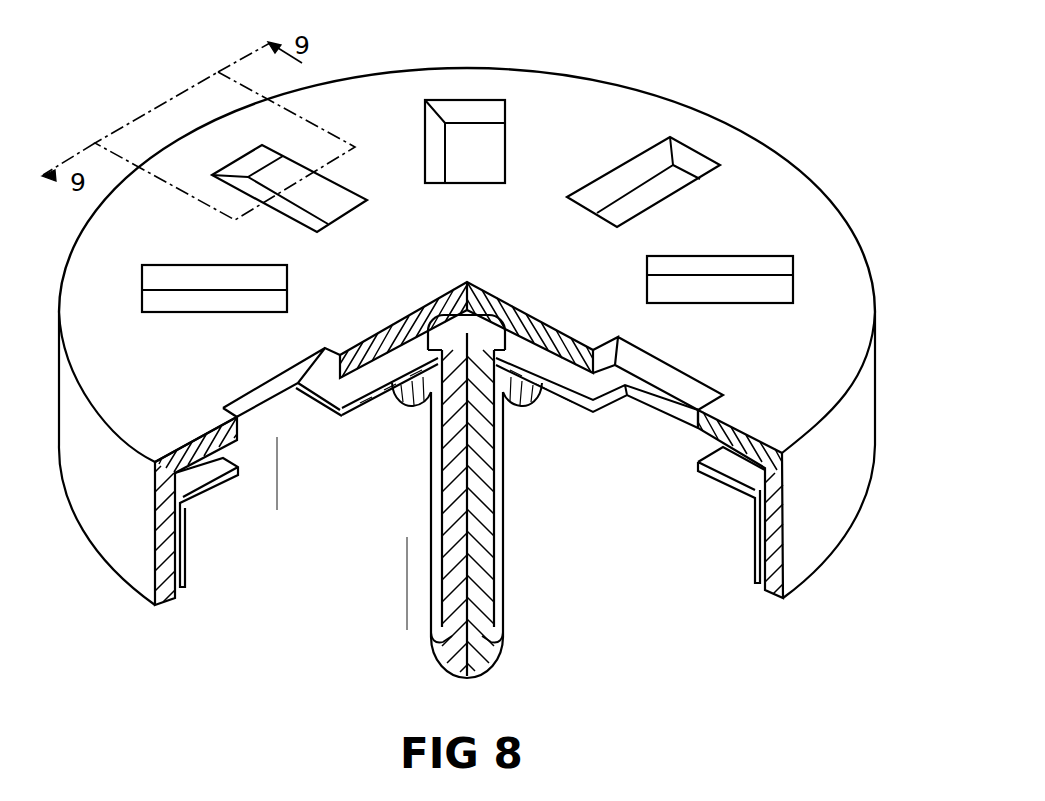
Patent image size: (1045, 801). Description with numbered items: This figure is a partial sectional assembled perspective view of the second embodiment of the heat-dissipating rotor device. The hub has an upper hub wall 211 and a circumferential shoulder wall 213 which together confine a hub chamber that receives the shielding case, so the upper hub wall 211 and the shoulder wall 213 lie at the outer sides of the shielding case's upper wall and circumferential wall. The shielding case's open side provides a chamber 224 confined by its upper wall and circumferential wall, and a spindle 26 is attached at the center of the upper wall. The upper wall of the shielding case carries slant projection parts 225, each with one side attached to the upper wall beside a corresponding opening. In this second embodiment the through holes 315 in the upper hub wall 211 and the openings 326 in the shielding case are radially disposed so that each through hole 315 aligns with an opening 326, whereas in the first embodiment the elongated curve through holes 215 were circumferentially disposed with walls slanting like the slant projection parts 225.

The upper hub wall 211 is at (368, 95).
The through hole 215 is at (673, 71).
The through hole 315 is at (733, 290).
The circumferential shoulder wall 213 is at (785, 527).
The opening 326 is at (277, 437).
The chamber 224 is at (407, 540).
The slant projection part 225 is at (757, 577).
The spindle 26 is at (477, 573).